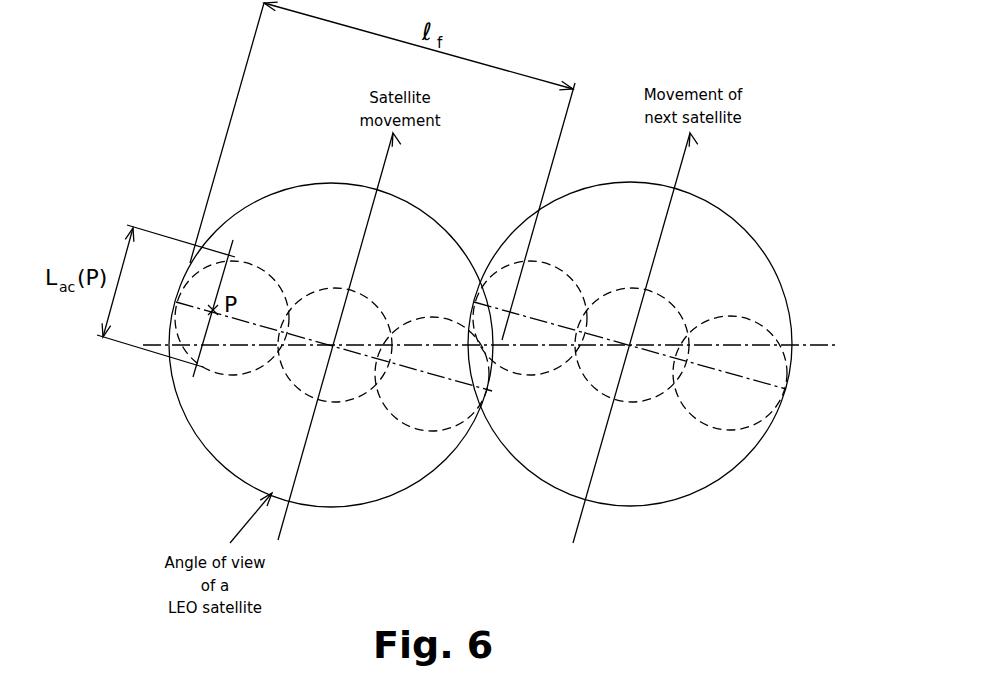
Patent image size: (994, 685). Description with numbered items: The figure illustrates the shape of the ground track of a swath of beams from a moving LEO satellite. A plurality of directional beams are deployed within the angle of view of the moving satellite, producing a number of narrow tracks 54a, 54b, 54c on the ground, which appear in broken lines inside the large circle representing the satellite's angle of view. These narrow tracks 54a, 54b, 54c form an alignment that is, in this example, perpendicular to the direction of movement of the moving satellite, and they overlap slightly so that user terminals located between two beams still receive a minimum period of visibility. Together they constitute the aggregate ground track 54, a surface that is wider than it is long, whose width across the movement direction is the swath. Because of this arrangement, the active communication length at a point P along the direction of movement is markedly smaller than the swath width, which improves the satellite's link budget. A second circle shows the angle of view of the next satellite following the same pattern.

The aggregate ground track 54 is at (325, 379).
The narrow track 54a is at (228, 375).
The narrow track 54b is at (290, 386).
The narrow track 54c is at (405, 399).